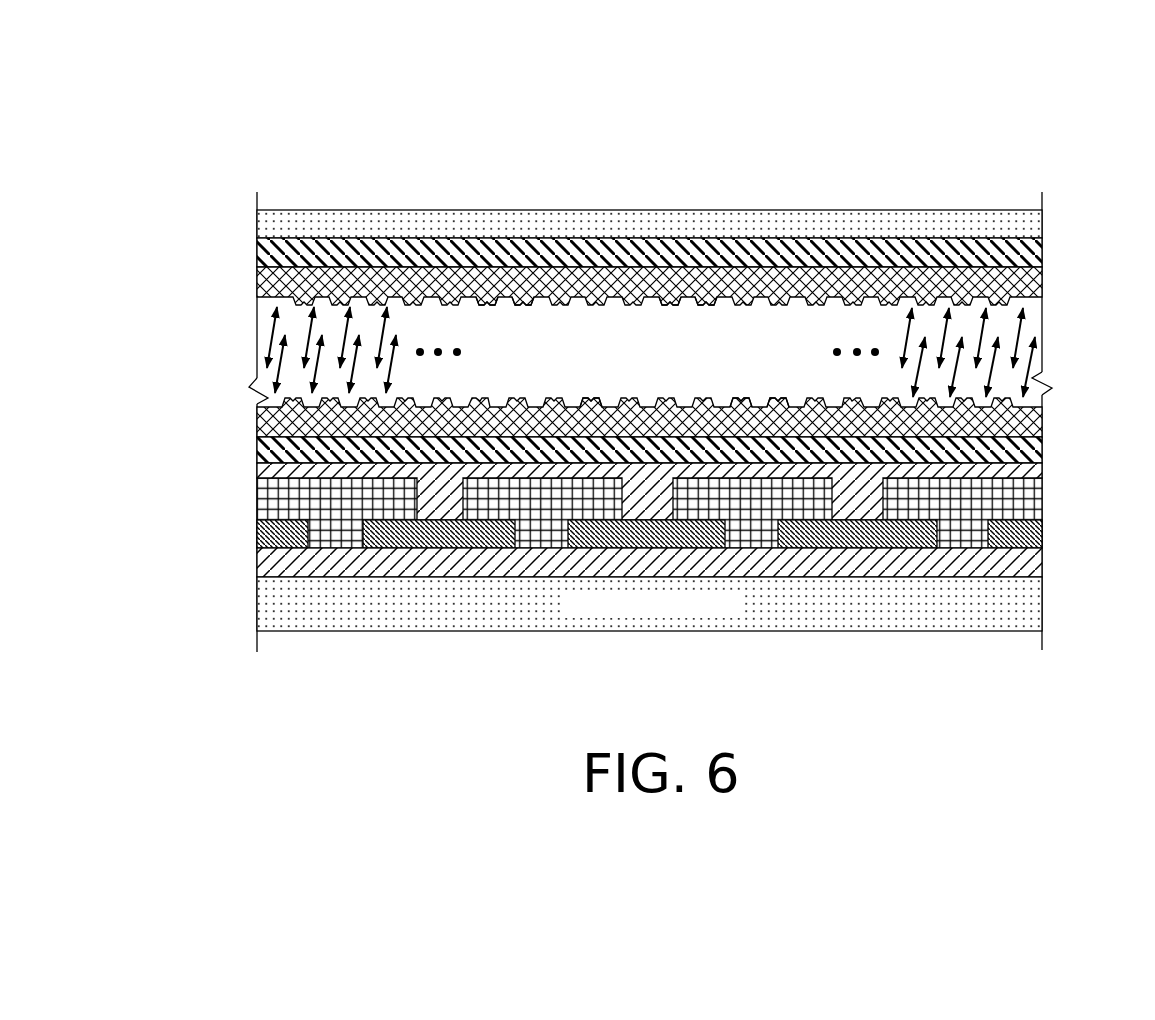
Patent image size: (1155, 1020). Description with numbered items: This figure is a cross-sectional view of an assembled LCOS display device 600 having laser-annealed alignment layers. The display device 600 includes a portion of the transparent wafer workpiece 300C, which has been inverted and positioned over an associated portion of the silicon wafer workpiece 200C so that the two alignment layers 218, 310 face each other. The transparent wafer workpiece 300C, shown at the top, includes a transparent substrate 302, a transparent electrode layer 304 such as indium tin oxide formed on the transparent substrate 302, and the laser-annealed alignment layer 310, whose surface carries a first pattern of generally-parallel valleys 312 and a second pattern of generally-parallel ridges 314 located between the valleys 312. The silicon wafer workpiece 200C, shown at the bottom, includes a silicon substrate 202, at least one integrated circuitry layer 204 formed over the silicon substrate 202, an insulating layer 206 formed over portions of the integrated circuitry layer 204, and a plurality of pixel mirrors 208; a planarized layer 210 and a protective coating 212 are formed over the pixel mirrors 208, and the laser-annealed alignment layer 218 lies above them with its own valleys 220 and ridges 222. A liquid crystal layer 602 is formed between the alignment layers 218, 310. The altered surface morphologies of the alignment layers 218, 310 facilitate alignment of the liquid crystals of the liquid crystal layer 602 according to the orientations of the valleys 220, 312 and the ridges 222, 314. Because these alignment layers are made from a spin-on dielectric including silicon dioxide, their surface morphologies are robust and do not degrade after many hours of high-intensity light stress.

The LCOS display device 600 is at (322, 120).
The transparent wafer workpiece 300C is at (238, 210).
The transparent substrate 302 is at (858, 208).
The transparent electrode layer 304 is at (1030, 252).
The alignment layer 310 is at (1043, 280).
The valleys 312 is at (540, 303).
The ridges 314 is at (706, 303).
The liquid crystal layer 602 is at (1030, 357).
The silicon wafer workpiece 200C is at (237, 408).
The alignment layer 218 is at (1047, 418).
The valleys 220 is at (613, 408).
The ridges 222 is at (790, 408).
The protective coating 212 is at (1030, 450).
The planarized layer 210 is at (1030, 472).
The pixel mirrors 208 is at (1027, 500).
The insulating layer 206 is at (1042, 540).
The integrated circuitry layer 204 is at (1032, 565).
The silicon substrate 202 is at (855, 633).